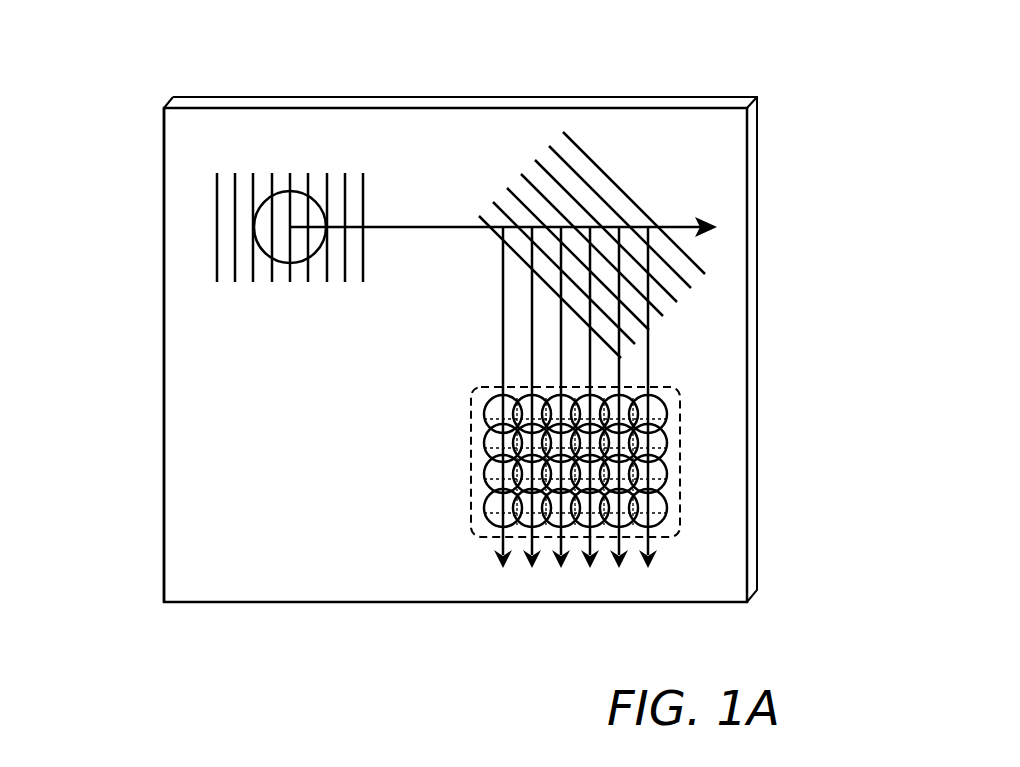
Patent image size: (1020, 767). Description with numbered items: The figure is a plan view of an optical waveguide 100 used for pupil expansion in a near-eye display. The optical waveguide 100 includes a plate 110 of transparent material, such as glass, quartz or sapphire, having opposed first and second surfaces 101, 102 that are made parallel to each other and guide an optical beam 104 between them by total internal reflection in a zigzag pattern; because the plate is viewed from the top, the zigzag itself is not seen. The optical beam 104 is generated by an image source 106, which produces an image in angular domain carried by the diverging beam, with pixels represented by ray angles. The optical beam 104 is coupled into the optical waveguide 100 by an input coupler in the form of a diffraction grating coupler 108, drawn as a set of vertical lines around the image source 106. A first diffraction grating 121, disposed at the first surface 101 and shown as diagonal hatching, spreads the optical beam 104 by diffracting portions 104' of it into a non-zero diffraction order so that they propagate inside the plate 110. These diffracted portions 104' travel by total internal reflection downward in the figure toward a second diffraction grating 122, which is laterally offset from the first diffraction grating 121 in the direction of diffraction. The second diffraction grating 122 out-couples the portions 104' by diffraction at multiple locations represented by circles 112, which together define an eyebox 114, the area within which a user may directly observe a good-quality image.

The optical waveguide 100 is at (126, 362).
The first surface 101 is at (164, 160).
The second surface 102 is at (758, 160).
The optical beam 104 is at (503, 138).
The diffracted portions of the optical beam 104' is at (683, 397).
The image source 106 is at (290, 190).
The diffraction grating coupler 108 is at (216, 243).
The plate 110 is at (258, 566).
The circles 112 is at (668, 505).
The eyebox 114 is at (680, 413).
The first diffraction grating 121 is at (623, 188).
The second diffraction grating 122 is at (668, 458).